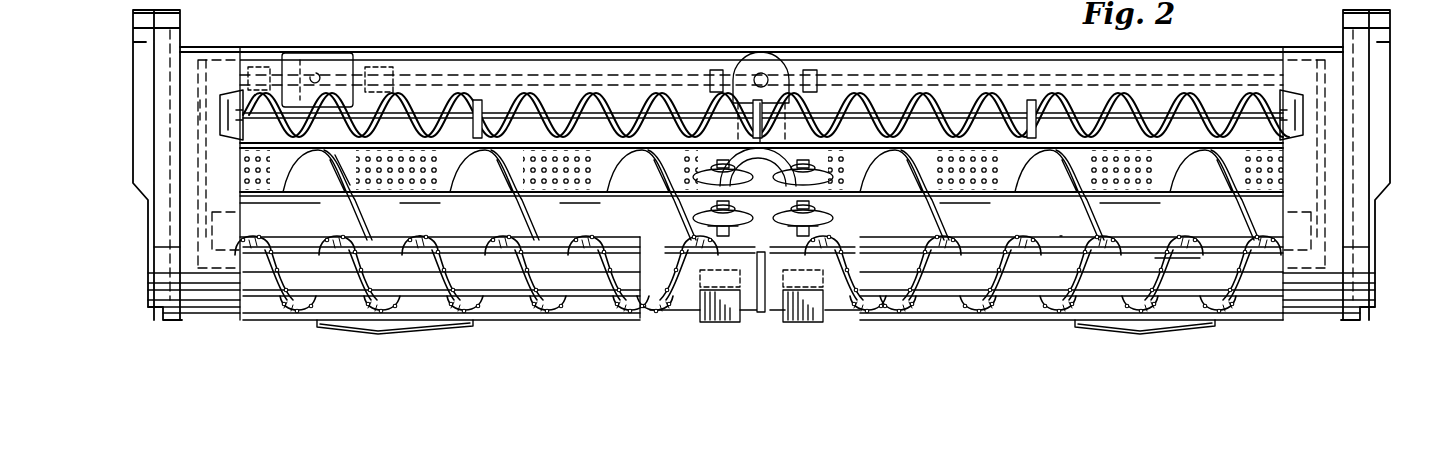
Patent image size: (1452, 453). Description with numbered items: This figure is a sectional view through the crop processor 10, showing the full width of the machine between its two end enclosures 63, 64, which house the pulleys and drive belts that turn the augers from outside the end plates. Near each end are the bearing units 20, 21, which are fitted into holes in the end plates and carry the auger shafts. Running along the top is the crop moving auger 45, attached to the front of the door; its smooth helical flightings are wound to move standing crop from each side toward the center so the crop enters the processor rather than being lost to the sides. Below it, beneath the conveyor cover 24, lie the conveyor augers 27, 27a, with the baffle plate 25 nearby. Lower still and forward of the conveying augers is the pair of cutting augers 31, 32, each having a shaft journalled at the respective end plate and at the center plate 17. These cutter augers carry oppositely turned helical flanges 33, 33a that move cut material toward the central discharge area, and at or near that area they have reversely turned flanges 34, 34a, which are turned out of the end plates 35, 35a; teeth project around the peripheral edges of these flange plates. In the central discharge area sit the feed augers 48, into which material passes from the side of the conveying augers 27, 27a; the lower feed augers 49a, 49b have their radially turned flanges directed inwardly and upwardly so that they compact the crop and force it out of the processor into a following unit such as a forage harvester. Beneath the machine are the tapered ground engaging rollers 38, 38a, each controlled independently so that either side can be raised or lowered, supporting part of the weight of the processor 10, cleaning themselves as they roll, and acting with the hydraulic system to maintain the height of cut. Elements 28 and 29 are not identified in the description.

The crop processor 10 is at (126, 312).
The center plate 17 is at (757, 310).
The bearing unit 20 is at (1297, 210).
The bearing unit 21 is at (207, 150).
The conveyor cover 24 is at (432, 165).
The baffle plate 25 is at (1232, 250).
The conveyor auger 27 is at (1216, 232).
The conveyor auger 27a is at (562, 212).
The auger panel 28 is at (1152, 210).
The perforated panel 29 is at (464, 175).
The cutting auger 31 is at (1178, 275).
The cutting auger 32 is at (583, 260).
The helical flange 33 is at (1057, 300).
The helical flange 33a is at (470, 316).
The reversely turned flange 34 is at (865, 305).
The reversely turned flange 34a is at (650, 300).
The end plate 35 is at (770, 310).
The end plate 35a is at (1285, 305).
The ground engaging roller 38 is at (1130, 330).
The ground engaging roller 38a is at (345, 327).
The crop moving auger 45 is at (925, 92).
The feed auger 48 is at (820, 160).
The lower feed auger 49a is at (840, 222).
The lower feed auger 49b is at (705, 185).
The enclosure 63 is at (1397, 108).
The enclosure 64 is at (120, 118).